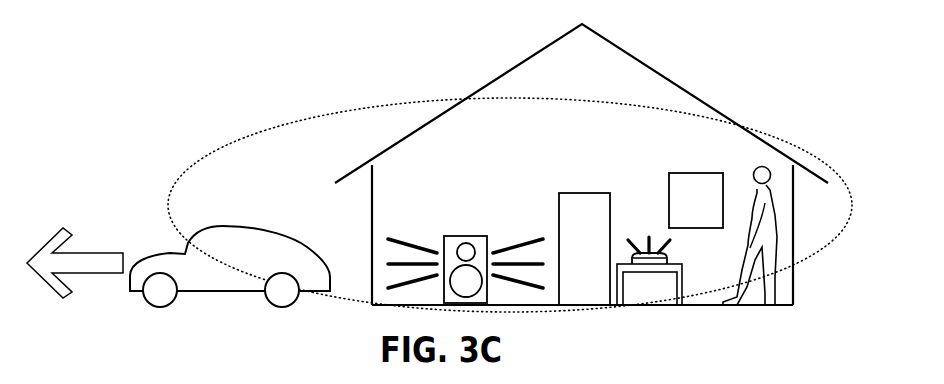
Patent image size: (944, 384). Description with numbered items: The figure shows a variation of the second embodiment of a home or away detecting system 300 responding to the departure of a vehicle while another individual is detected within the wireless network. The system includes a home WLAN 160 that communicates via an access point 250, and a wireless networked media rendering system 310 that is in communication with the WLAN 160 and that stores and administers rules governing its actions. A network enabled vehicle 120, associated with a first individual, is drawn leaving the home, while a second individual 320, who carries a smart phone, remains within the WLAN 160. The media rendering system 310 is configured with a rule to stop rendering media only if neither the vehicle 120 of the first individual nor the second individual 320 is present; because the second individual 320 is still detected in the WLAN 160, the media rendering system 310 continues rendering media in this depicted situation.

The home or away detecting system 300 is at (410, 77).
The home WLAN 160 is at (797, 145).
The network enabled vehicle 120 is at (256, 278).
The wireless networked media rendering system 310 is at (467, 236).
The access point 250 is at (641, 251).
The second individual 320 is at (768, 185).